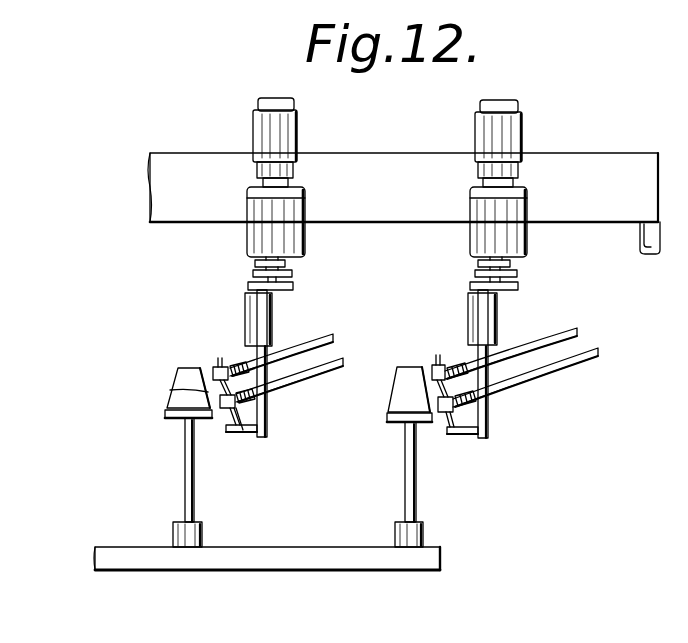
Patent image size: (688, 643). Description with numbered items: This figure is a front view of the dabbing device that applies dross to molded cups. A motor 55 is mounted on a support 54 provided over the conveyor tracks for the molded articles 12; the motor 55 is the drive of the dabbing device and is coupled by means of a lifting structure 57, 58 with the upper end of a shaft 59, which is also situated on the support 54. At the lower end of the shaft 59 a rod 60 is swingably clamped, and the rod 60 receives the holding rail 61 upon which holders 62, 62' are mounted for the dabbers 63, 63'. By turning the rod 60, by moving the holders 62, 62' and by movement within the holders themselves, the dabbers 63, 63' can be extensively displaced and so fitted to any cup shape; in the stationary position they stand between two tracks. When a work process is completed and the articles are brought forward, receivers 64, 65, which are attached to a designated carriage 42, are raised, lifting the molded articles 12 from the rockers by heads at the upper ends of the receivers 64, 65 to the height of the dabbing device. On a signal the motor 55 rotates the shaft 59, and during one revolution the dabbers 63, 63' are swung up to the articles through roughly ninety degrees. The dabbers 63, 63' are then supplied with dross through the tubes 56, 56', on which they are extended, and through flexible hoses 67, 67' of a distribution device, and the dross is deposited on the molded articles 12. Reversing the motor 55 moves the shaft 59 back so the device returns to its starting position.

The molded articles 12 is at (178, 390).
The carriage 42 is at (150, 558).
The support 54 is at (430, 172).
The motor 55 is at (270, 130).
The tube 56 is at (350, 329).
The tube 56' is at (352, 440).
The lifting structure 57 is at (258, 272).
The lifting structure 58 is at (252, 285).
The shaft 59 is at (266, 405).
The rod 60 is at (240, 432).
The holding rail 61 is at (205, 390).
The holder 62 is at (301, 346).
The holder 62' is at (296, 421).
The dabber 63 is at (278, 376).
The dabber 63' is at (270, 414).
The receiver 64 is at (193, 518).
The receiver 65 is at (413, 495).
The flexible hose 67 is at (403, 338).
The flexible hose 67' is at (417, 367).